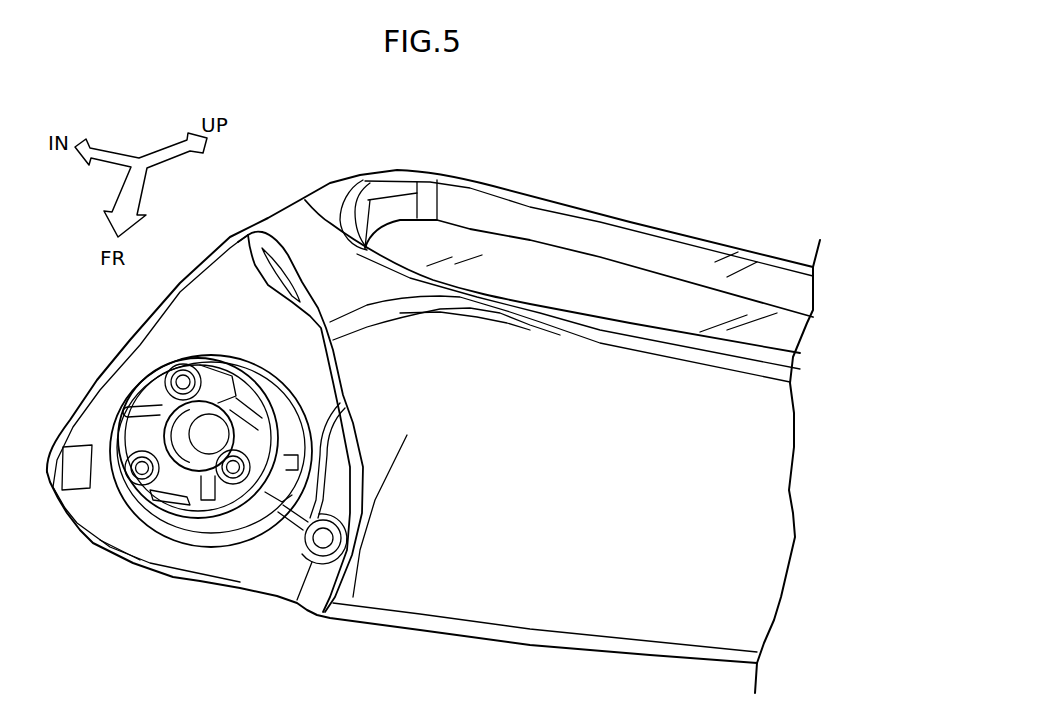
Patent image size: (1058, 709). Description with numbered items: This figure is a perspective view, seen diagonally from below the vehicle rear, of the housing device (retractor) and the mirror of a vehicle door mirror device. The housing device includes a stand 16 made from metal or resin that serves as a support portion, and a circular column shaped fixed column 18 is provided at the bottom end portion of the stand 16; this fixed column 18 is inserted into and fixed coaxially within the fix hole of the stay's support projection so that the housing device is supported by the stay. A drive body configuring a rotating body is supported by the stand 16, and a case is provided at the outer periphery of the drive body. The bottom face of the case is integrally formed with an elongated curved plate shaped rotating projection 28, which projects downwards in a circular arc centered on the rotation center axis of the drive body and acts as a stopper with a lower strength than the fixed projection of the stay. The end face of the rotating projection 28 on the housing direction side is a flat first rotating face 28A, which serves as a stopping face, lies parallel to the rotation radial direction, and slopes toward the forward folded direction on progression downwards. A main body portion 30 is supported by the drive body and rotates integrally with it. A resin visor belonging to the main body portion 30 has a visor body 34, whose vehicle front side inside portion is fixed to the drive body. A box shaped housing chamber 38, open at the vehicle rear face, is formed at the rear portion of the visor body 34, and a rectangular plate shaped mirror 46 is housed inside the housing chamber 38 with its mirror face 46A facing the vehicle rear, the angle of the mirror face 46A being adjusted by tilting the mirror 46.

The main body portion 30 is at (491, 181).
The first rotating face 28A is at (288, 503).
The visor body 34 is at (660, 192).
The mirror 46 is at (533, 247).
The mirror face 46A is at (598, 294).
The housing chamber 38 is at (735, 272).
The fixed column 18 is at (268, 388).
The stand 16 is at (235, 356).
The rotating projection 28 is at (180, 538).